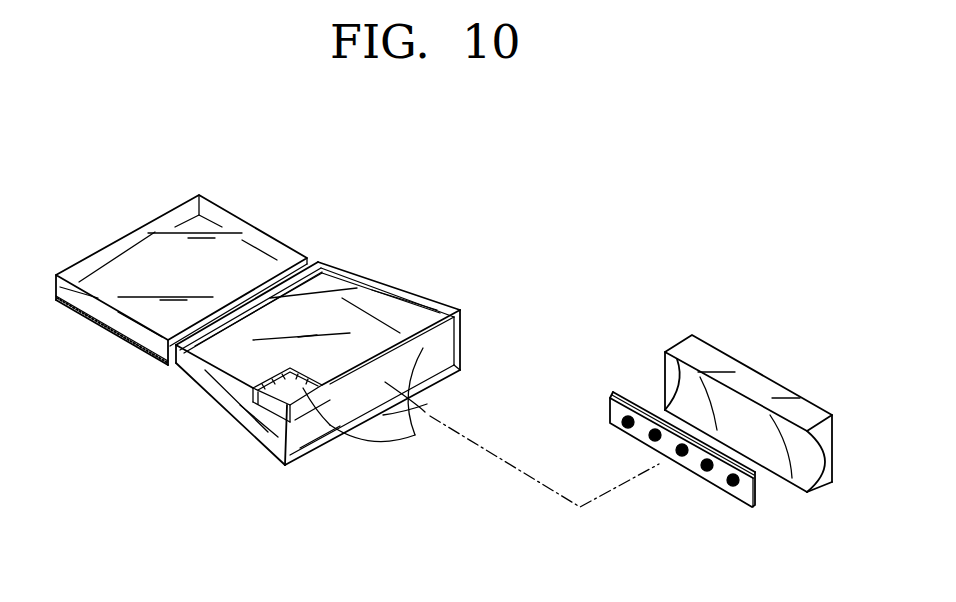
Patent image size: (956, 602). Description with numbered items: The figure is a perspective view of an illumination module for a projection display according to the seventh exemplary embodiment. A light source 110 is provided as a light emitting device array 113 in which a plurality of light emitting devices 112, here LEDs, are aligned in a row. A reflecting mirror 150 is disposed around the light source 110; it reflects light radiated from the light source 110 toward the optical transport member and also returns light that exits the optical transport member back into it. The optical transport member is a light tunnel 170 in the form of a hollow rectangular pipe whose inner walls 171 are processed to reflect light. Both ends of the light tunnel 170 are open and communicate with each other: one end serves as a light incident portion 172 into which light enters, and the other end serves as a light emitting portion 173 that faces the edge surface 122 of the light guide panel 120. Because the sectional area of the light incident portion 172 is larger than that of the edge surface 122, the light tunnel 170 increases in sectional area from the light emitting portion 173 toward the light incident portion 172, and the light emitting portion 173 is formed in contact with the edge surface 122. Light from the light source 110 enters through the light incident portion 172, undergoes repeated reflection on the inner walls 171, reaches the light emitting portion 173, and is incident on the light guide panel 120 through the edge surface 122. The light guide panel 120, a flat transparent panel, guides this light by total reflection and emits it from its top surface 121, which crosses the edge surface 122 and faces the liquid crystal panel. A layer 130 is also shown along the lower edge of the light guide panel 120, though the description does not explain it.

The light source 110 is at (690, 477).
The light emitting devices 112 is at (622, 422).
The light emitting device array 113 is at (610, 396).
The light guide panel 120 is at (168, 212).
The top surface 121 is at (215, 213).
The edge surface 122 is at (340, 263).
The reflective sheet 130 is at (93, 322).
The reflecting mirror 150 is at (757, 378).
The light tunnel 170 is at (388, 284).
The inner walls 171 is at (382, 406).
The light incident portion 172 is at (316, 433).
The light emitting portion 173 is at (205, 355).